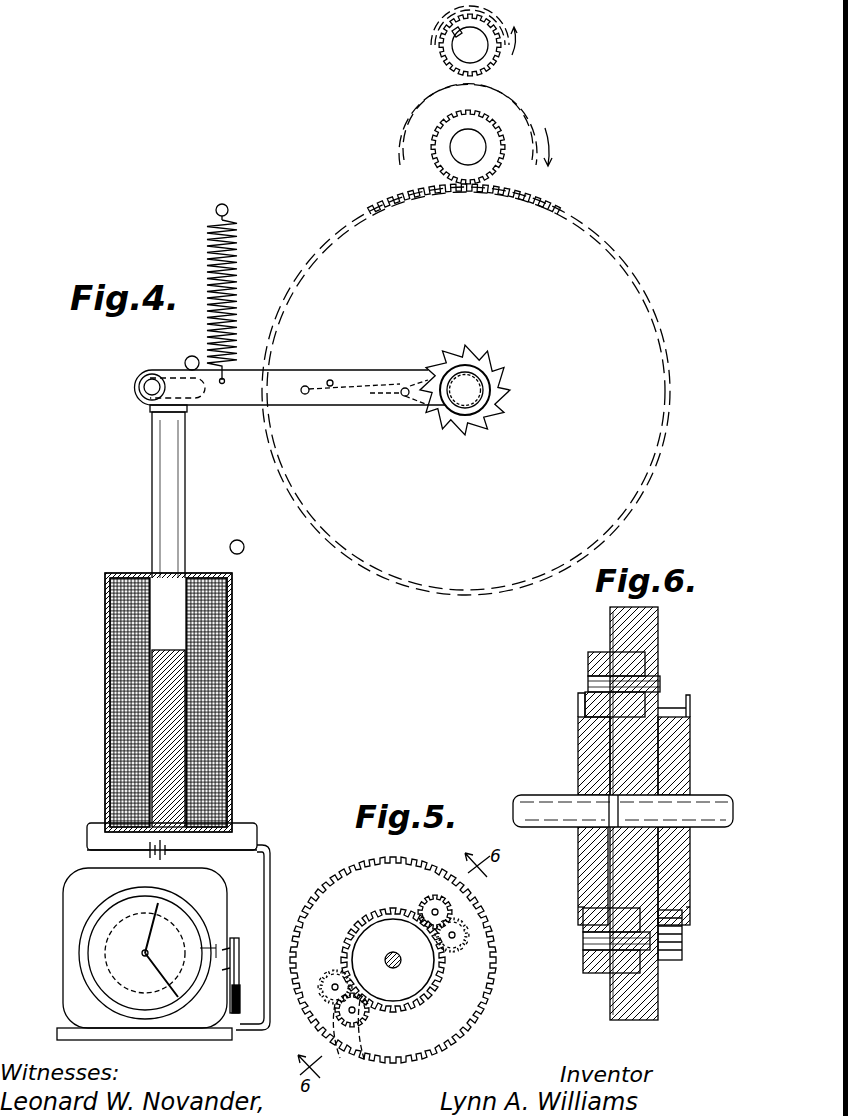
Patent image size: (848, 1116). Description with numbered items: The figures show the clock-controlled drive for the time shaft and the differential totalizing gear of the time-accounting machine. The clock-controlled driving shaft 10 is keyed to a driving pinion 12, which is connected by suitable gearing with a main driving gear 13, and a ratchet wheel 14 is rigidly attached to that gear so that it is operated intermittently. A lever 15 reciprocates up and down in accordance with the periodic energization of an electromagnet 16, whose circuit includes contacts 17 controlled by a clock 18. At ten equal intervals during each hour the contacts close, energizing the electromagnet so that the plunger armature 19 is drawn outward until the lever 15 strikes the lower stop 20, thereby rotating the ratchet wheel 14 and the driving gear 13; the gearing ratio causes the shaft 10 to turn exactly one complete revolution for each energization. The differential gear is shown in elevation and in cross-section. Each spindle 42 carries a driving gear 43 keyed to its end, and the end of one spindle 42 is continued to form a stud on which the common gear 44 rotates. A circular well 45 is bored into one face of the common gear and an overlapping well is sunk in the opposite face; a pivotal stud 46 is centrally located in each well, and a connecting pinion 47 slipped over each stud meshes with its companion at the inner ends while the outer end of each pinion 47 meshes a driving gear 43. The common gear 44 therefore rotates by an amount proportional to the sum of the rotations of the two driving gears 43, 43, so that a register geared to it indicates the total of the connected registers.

In FIG. 4, the clock-controlled driving shaft 10 is at (455, 50).
In FIG. 4, the driving pinion 12 is at (484, 25).
In FIG. 4, the main driving gear 13 is at (548, 237).
In FIG. 4, the ratchet wheel 14 is at (492, 390).
In FIG. 4, the lever 15 is at (232, 400).
In FIG. 4, the electromagnet 16 is at (232, 713).
In FIG. 4, the contacts 17 is at (240, 972).
In FIG. 4, the clock 18 is at (120, 938).
In FIG. 4, the plunger armature 19 is at (187, 497).
In FIG. 4, the lower stop 20 is at (245, 547).
In FIG. 5, the spindle 42 is at (400, 964).
In FIG. 6, the spindle 42 is at (703, 797).
In FIG. 5, the driving gear 43 is at (403, 993).
In FIG. 6, the driving gear 43 is at (585, 745).
In FIG. 5, the common gear 44 is at (480, 950).
In FIG. 6, the common gear 44 is at (645, 640).
In FIG. 6, the well 45 is at (612, 640).
In FIG. 5, the pivotal stud 46 is at (443, 908).
In FIG. 6, the pivotal stud 46 is at (653, 682).
In FIG. 5, the connecting pinion 47 is at (428, 908).
In FIG. 6, the connecting pinion 47 is at (588, 668).